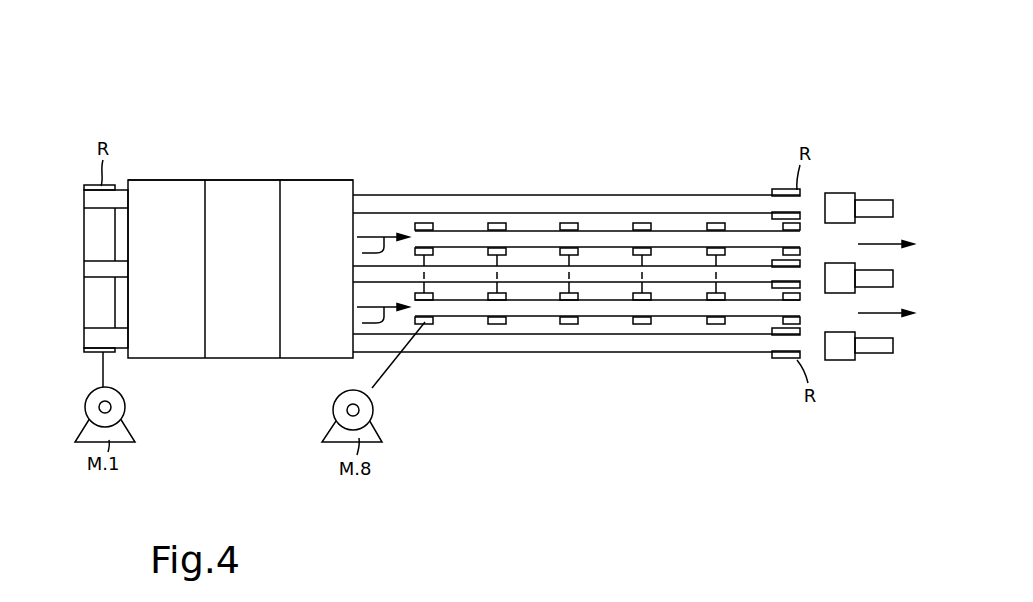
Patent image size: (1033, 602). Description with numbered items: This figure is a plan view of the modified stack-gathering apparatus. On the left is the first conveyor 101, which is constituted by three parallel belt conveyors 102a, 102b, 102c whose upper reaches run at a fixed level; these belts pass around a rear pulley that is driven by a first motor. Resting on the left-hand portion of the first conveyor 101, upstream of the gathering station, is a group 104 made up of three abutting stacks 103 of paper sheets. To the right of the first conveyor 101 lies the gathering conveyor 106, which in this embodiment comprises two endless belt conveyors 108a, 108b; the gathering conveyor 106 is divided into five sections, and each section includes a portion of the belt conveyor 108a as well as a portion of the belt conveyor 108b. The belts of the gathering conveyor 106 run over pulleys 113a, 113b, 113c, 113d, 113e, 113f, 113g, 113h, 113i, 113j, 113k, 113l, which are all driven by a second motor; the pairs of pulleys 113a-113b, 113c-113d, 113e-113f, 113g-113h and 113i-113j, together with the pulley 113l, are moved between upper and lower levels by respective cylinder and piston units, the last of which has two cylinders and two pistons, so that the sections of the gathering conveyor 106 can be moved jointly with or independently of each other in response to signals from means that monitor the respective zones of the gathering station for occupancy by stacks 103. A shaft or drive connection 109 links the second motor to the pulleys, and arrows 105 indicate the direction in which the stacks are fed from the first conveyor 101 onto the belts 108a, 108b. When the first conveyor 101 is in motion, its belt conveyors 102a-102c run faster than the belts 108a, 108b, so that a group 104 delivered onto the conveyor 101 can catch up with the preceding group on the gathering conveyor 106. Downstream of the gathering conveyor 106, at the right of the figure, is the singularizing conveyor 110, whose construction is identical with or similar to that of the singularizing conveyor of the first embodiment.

The first conveyor 101 is at (231, 372).
The belt conveyor 102a is at (365, 204).
The belt conveyor 102b is at (365, 270).
The belt conveyor 102c is at (365, 337).
The stacks of paper sheets 103 is at (300, 190).
The group 104 is at (160, 170).
The feed arrows 105 is at (353, 253).
The gathering conveyor 106 is at (688, 108).
The endless belt conveyor 108a is at (538, 243).
The endless belt conveyor 108b is at (608, 310).
The drive shaft 109 is at (392, 366).
The singularizing conveyor 110 is at (867, 170).
The pulley 113a is at (424, 223).
The pulley 113b is at (424, 324).
The pulley 113c is at (497, 223).
The pulley 113d is at (497, 324).
The pulley 113e is at (570, 223).
The pulley 113f is at (569, 324).
The pulley 113g is at (643, 223).
The pulley 113h is at (643, 324).
The pulley 113i is at (716, 223).
The pulley 113j is at (716, 324).
The pulley 113k is at (802, 222).
The pulley 113l is at (782, 322).